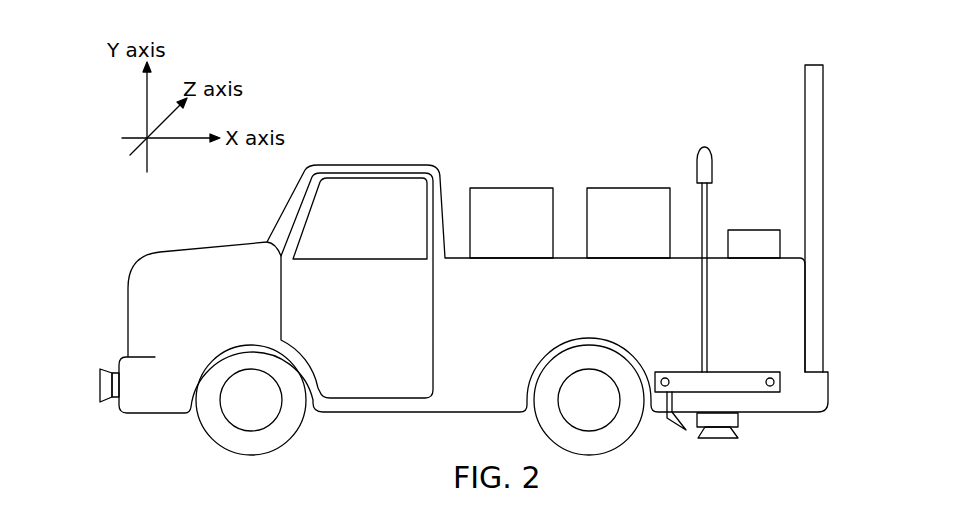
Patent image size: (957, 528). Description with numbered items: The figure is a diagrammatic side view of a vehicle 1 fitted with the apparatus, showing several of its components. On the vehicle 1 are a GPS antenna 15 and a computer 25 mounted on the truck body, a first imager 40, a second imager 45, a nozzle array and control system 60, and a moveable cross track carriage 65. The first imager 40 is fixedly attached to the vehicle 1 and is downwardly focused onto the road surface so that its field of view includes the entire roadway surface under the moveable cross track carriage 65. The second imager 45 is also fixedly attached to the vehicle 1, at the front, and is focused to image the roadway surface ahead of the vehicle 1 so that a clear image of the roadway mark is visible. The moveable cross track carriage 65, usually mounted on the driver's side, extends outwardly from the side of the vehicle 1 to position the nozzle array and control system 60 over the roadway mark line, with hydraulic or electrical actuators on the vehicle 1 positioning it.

The vehicle 1 is at (437, 167).
The GPS antenna 15 is at (696, 162).
The computer 25 is at (752, 229).
The first imager 40 is at (740, 424).
The second imager 45 is at (99, 374).
The nozzle array and control system 60 is at (677, 427).
The moveable cross track carriage 65 is at (769, 394).